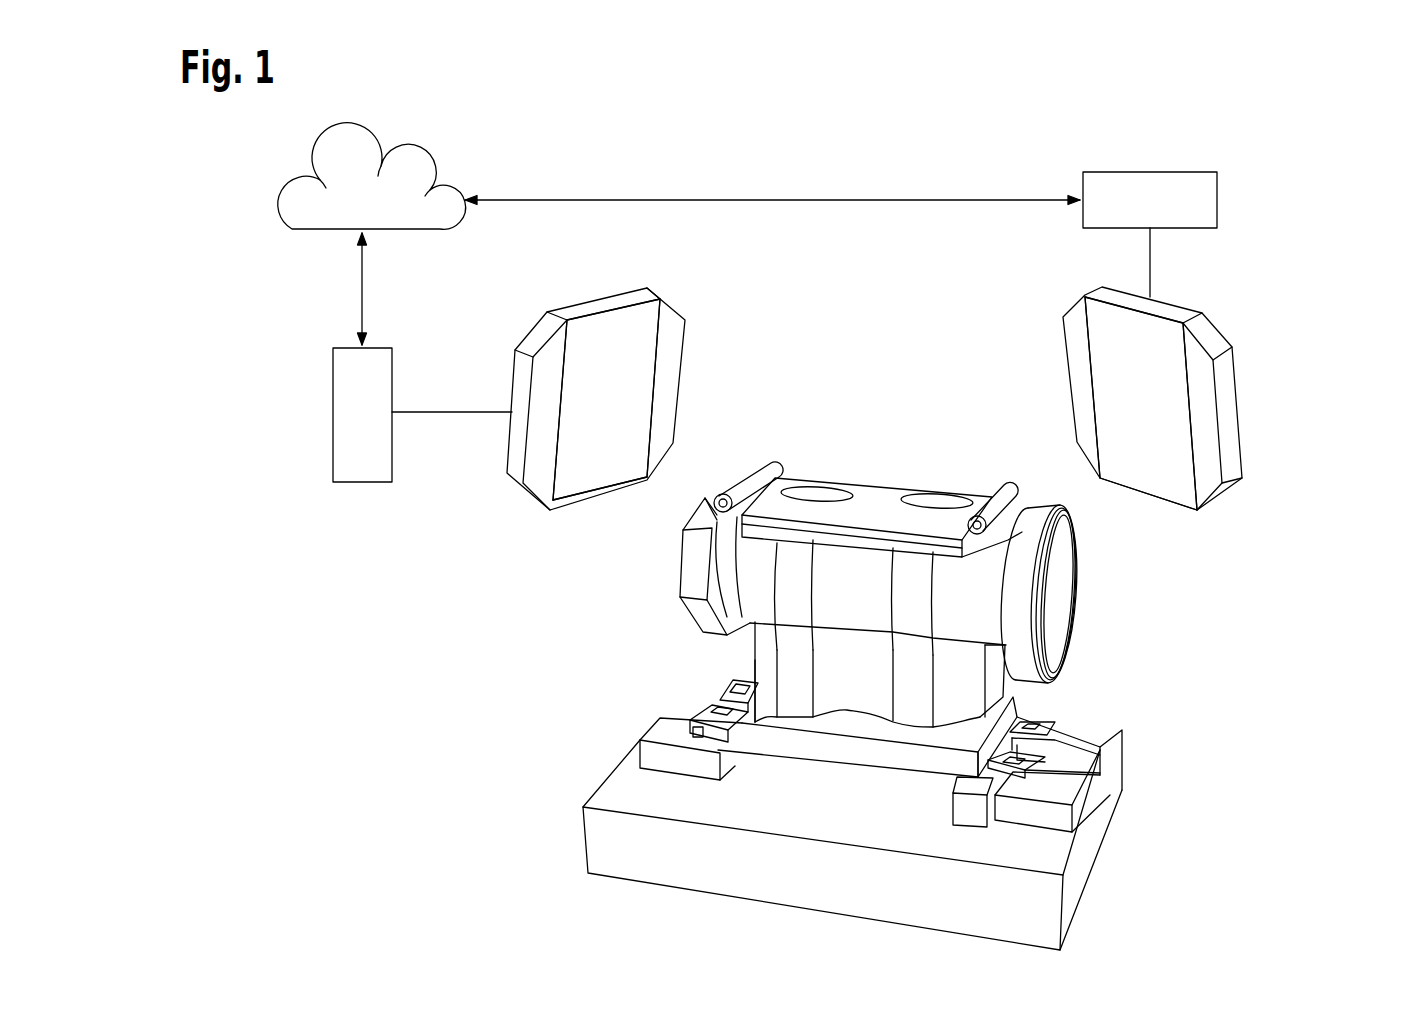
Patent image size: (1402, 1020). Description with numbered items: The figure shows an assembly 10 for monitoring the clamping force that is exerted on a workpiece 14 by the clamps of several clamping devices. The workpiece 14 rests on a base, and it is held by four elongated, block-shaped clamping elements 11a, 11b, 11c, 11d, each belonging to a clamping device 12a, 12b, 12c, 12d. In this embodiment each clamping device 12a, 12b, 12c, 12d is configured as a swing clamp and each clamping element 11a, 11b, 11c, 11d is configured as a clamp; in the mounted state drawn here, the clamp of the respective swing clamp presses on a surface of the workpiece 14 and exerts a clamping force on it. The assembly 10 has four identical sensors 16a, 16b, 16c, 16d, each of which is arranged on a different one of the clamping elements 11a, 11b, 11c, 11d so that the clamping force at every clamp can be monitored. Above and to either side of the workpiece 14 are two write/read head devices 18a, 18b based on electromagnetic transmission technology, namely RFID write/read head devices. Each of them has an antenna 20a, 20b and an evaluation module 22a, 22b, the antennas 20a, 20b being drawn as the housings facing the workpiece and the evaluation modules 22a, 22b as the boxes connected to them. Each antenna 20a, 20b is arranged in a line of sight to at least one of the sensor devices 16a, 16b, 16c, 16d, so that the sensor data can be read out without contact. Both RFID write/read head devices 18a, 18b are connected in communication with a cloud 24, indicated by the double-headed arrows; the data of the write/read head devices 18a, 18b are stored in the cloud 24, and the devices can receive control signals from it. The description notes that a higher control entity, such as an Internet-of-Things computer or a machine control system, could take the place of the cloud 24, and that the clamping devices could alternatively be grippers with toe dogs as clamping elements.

The assembly 10 is at (695, 157).
The workpiece 14 is at (883, 495).
The cloud 24 is at (288, 210).
The evaluation module 22a is at (1217, 190).
The evaluation module 22b is at (333, 383).
The RFID write/read head device 18a is at (1247, 327).
The RFID write/read head device 18b is at (520, 299).
The antenna 20a is at (1240, 413).
The antenna 20b is at (517, 358).
The clamping element 11a is at (1053, 733).
The clamping element 11b is at (1087, 760).
The clamping element 11c is at (720, 700).
The clamping element 11d is at (713, 707).
The clamping device 12a is at (1122, 755).
The clamping device 12b is at (1100, 813).
The clamping device 12c is at (675, 680).
The clamping device 12d is at (627, 712).
The sensor 16a is at (1040, 720).
The sensor 16b is at (1020, 773).
The sensor 16c is at (737, 678).
The sensor 16d is at (710, 732).